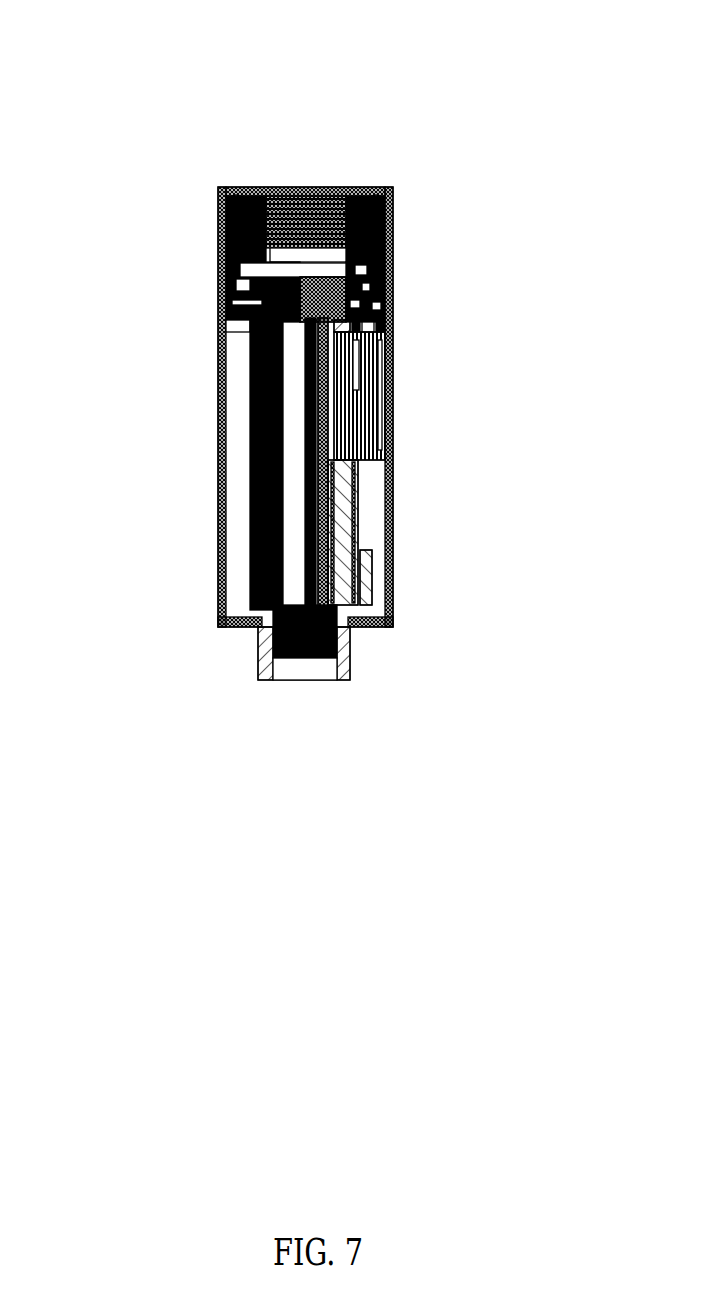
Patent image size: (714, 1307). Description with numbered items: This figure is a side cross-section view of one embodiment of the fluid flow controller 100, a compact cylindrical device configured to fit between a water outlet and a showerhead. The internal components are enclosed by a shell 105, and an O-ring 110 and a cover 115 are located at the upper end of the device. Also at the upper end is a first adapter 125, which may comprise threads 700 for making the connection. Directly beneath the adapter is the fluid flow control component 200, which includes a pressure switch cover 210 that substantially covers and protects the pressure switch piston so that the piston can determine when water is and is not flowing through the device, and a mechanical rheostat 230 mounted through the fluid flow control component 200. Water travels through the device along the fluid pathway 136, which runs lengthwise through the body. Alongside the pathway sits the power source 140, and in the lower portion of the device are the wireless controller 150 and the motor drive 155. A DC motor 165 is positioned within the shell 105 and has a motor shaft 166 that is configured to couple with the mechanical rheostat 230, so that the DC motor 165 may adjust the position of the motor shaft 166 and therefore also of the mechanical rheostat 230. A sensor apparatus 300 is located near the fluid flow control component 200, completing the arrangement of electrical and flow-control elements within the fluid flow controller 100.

The fluid flow controller 100 is at (405, 97).
The shell 105 is at (393, 273).
The O-ring 110 is at (386, 190).
The cover 115 is at (240, 190).
The first adapter 125 is at (222, 194).
The fluid pathway 136 is at (328, 535).
The power source 140 is at (292, 451).
The wireless controller 150 is at (370, 500).
The motor drive 155 is at (372, 588).
The DC motor 165 is at (375, 410).
The motor shaft 166 is at (390, 325).
The fluid flow control component 200 is at (185, 307).
The pressure switch cover 210 is at (220, 282).
The mechanical rheostat 230 is at (362, 255).
The sensor apparatus 300 is at (390, 295).
The threads 700 is at (300, 200).